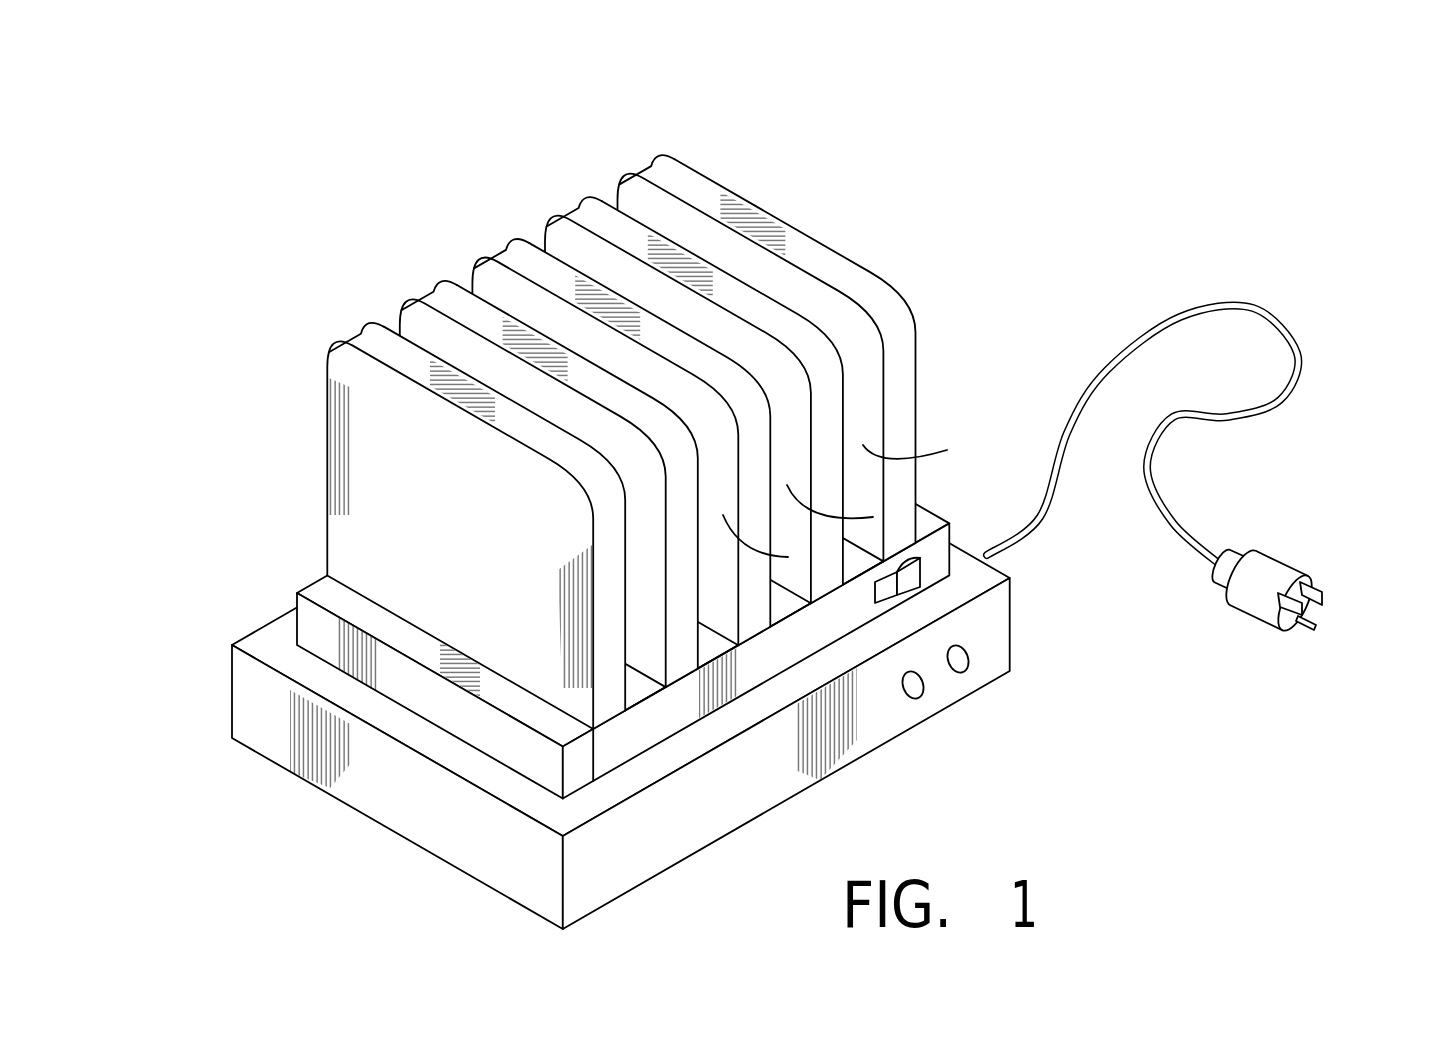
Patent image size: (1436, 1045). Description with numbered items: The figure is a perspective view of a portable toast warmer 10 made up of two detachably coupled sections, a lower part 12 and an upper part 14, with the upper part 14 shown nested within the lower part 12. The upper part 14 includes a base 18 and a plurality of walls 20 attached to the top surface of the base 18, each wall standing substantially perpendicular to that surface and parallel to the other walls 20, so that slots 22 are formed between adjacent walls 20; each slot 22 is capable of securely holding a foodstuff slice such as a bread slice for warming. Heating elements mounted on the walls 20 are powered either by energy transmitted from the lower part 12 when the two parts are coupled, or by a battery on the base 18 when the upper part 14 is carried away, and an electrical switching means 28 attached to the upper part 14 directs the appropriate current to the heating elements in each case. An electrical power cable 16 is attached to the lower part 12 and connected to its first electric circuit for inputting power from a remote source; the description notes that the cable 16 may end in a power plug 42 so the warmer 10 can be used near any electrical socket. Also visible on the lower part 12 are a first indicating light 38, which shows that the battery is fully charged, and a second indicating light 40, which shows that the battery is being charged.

The portable toast warmer 10 is at (988, 171).
The lower part 12 is at (367, 815).
The upper part 14 is at (323, 460).
The electrical power cable 16 is at (1230, 308).
The base 18 is at (327, 638).
The walls 20 is at (673, 170).
The slots 22 is at (655, 563).
The electrical switching means 28 is at (912, 585).
The first indicating light 38 is at (963, 668).
The second indicating light 40 is at (917, 692).
The plug 42 is at (1265, 572).